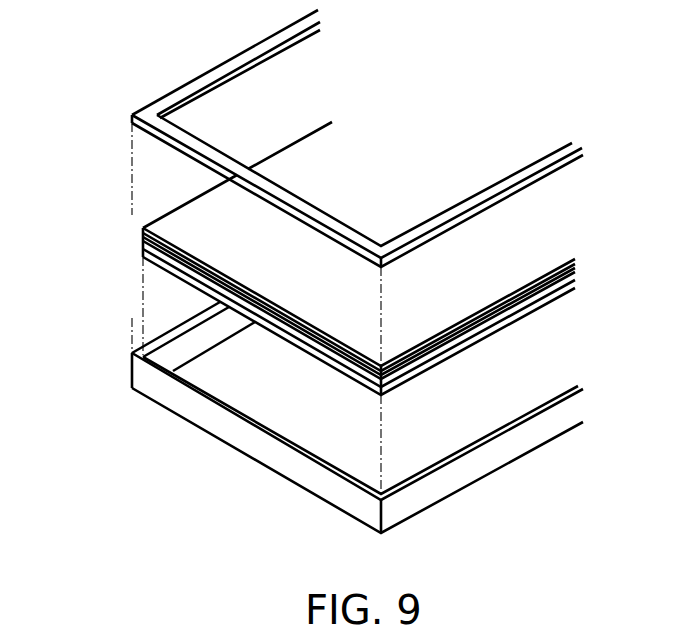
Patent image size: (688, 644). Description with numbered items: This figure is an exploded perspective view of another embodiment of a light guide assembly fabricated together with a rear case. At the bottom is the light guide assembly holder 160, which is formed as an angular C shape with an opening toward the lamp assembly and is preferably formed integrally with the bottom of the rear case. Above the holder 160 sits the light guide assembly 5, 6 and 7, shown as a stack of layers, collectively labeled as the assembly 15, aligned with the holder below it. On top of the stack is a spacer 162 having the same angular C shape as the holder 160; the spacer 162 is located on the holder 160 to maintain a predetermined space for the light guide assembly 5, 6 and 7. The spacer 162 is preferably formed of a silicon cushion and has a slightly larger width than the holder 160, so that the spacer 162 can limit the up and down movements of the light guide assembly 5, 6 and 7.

The spacer 162 is at (218, 72).
The display panel stack 15 is at (306, 258).
The light guide assembly 5 is at (141, 232).
The light guide assembly 6 is at (157, 253).
The light guide assembly 7 is at (178, 274).
The light guide assembly holder 160 is at (172, 442).